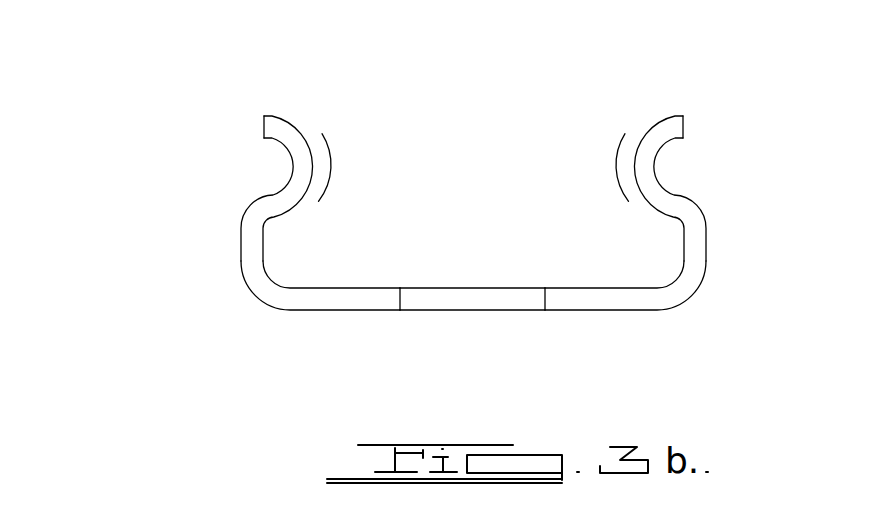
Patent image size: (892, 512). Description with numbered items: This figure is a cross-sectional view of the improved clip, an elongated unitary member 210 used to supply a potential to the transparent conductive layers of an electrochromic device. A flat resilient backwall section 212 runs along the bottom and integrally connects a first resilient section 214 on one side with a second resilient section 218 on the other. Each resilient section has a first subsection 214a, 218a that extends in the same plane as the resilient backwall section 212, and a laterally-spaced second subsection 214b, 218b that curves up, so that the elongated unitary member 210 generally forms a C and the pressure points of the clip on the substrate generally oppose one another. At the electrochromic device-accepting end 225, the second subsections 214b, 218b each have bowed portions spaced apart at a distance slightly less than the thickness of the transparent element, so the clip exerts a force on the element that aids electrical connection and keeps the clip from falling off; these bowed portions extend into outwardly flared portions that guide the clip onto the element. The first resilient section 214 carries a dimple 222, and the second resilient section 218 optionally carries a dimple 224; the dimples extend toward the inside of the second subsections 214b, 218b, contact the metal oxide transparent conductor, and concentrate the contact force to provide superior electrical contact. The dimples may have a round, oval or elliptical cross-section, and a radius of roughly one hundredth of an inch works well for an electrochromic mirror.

The elongated unitary member 210 is at (135, 413).
The resilient backwall section 212 is at (478, 309).
The first resilient section 214 is at (692, 234).
The first subsection 214a is at (635, 309).
The second subsection 214b is at (679, 204).
The second resilient section 218 is at (268, 247).
The first subsection 218a is at (315, 309).
The second subsection 218b is at (273, 212).
The dimple 222 is at (618, 158).
The dimple 224 is at (332, 168).
The electrochromic device-accepting end 225 is at (272, 113).